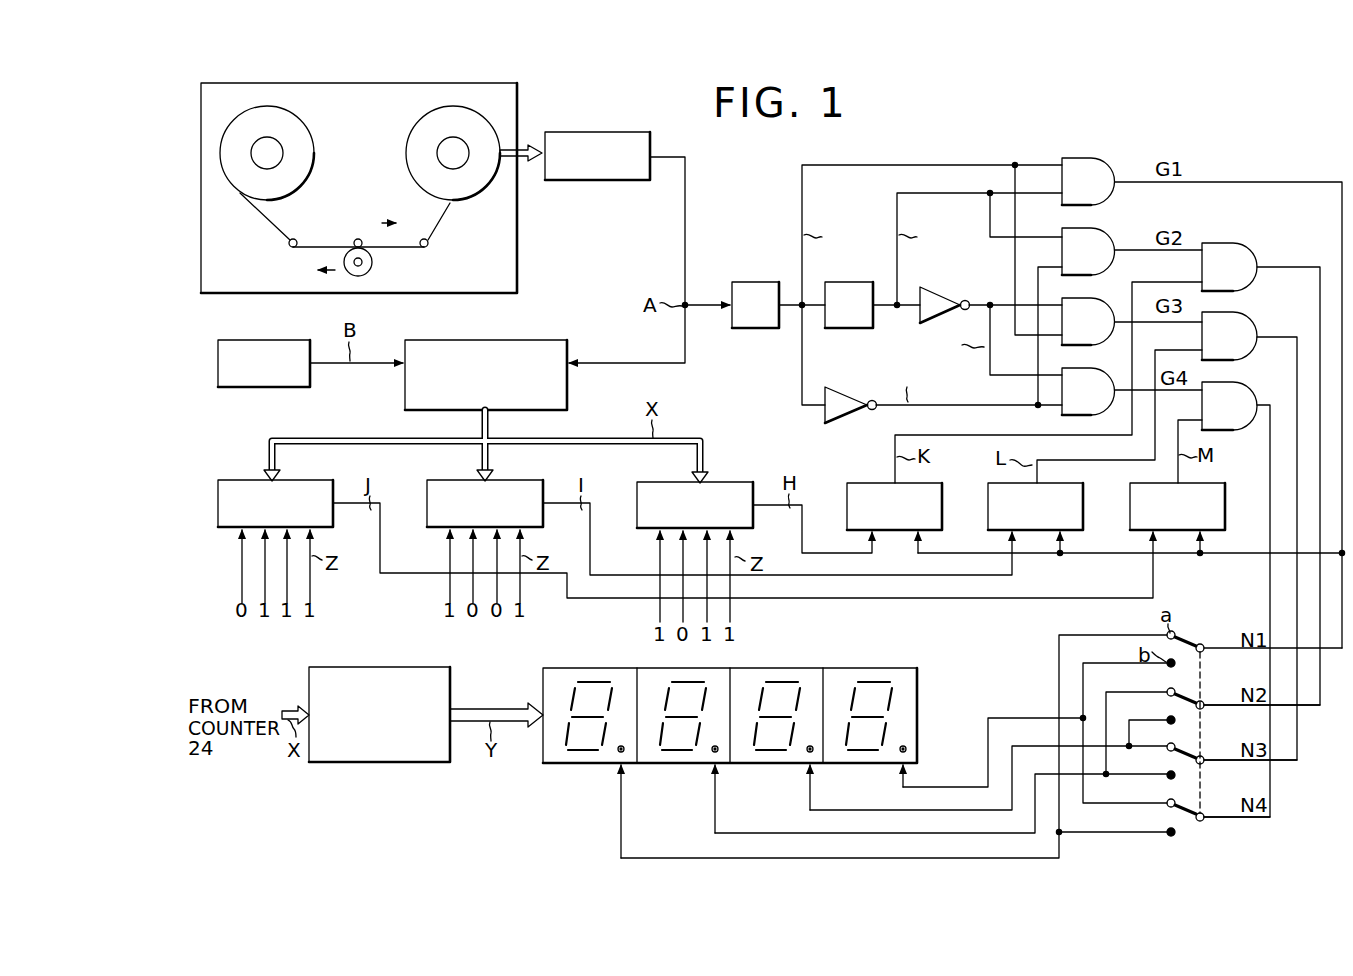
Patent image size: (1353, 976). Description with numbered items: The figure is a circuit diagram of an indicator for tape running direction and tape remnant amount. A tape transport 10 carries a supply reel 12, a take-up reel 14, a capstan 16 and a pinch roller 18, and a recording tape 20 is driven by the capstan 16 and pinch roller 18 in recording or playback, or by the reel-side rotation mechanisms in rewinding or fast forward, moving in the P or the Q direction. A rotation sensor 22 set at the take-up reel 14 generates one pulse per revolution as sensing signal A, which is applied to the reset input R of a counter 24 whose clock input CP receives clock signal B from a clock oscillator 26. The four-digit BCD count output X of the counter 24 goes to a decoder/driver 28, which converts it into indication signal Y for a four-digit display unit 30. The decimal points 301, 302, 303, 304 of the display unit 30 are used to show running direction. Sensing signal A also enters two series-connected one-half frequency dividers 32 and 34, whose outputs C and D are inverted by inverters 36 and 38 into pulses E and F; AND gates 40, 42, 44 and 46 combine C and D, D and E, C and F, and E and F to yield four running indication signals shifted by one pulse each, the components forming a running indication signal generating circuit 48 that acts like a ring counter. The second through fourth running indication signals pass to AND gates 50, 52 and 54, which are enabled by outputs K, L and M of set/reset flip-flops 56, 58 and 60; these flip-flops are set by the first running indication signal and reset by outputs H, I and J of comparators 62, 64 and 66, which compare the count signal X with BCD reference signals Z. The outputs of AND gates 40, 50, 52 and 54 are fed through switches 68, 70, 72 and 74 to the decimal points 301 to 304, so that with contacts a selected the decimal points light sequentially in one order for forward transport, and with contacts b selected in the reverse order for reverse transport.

The tape transport 10 is at (384, 188).
The supply reel 12 is at (295, 131).
The take-up reel 14 is at (415, 165).
The capstan 16 is at (358, 240).
The pinch roller 18 is at (372, 262).
The recording tape 20 is at (431, 237).
The rotation sensor 22 is at (627, 135).
The counter 24 is at (549, 344).
The clock oscillator 26 is at (287, 344).
The decoder/driver 28 is at (418, 667).
The display unit 30 is at (917, 684).
The decimal point 301 is at (624, 753).
The decimal point 302 is at (718, 753).
The decimal point 303 is at (813, 753).
The decimal point 304 is at (906, 753).
The ½ frequency divider 32 is at (747, 284).
The ½ frequency divider 34 is at (867, 284).
The inverter 36 is at (849, 396).
The inverter 38 is at (945, 303).
The AND gate 40 is at (1110, 167).
The AND gate 42 is at (1110, 245).
The AND gate 44 is at (1108, 310).
The AND gate 46 is at (1108, 380).
The running indication signal generating circuit 48 is at (956, 146).
The AND gate 50 is at (1234, 246).
The AND gate 52 is at (1242, 326).
The AND gate 54 is at (1242, 398).
The set/reset flip-flop 56 is at (943, 503).
The set/reset flip-flop 58 is at (1084, 503).
The set/reset flip-flop 60 is at (1226, 503).
The comparator 62 is at (735, 486).
The comparator 64 is at (532, 488).
The comparator 66 is at (317, 488).
The switch 68 is at (1195, 659).
The switch 70 is at (1204, 713).
The switch 72 is at (1204, 769).
The switch 74 is at (1204, 825).